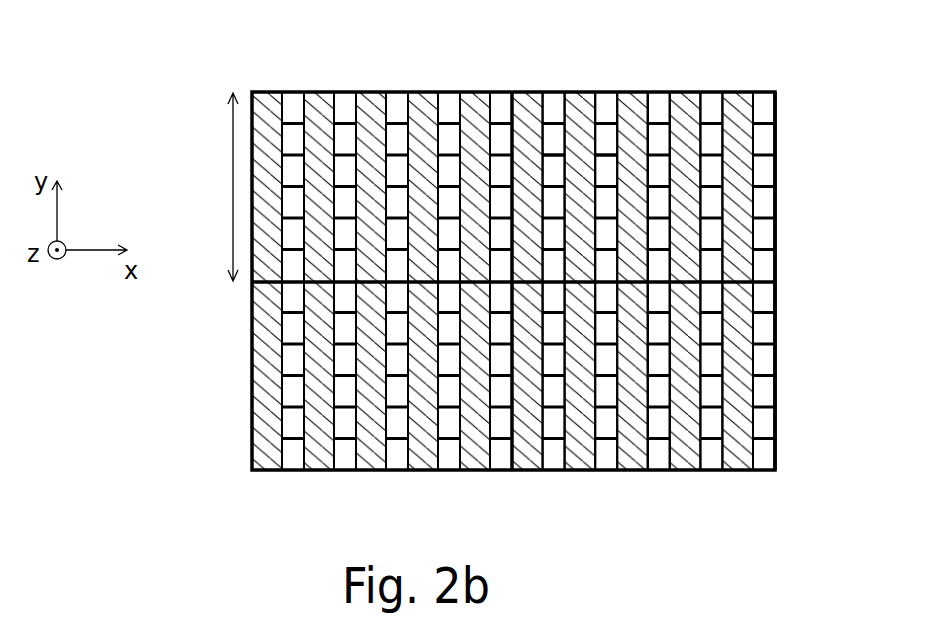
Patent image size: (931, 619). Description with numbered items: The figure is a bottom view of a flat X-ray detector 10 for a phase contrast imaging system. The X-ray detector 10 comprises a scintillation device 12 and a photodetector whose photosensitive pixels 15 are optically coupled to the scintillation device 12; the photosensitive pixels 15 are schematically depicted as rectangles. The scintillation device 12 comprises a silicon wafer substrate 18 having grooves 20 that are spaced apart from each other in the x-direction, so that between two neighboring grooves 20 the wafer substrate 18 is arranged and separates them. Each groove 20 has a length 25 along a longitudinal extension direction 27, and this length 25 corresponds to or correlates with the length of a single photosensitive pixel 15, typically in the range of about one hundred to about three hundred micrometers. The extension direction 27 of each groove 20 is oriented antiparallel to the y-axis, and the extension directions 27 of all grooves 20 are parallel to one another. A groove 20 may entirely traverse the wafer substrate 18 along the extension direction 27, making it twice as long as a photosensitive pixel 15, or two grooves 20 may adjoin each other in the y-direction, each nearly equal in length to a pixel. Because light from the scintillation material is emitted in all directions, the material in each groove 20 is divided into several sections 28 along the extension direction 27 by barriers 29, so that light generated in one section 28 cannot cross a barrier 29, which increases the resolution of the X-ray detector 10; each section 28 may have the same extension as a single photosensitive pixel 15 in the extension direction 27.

The X-ray detector 10 is at (771, 83).
The scintillation device 12 is at (780, 130).
The photosensitive pixels 15 is at (373, 87).
The silicon wafer substrate 18 is at (424, 104).
The grooves 20 is at (290, 88).
The length 25 is at (233, 187).
The longitudinal extension direction 27 is at (345, 116).
The sections 28 is at (551, 145).
The barriers 29 is at (606, 125).